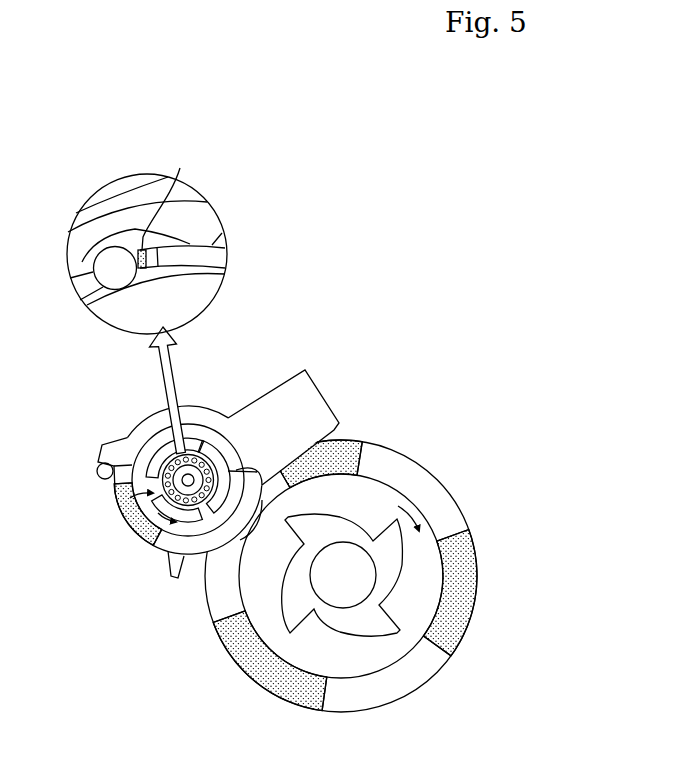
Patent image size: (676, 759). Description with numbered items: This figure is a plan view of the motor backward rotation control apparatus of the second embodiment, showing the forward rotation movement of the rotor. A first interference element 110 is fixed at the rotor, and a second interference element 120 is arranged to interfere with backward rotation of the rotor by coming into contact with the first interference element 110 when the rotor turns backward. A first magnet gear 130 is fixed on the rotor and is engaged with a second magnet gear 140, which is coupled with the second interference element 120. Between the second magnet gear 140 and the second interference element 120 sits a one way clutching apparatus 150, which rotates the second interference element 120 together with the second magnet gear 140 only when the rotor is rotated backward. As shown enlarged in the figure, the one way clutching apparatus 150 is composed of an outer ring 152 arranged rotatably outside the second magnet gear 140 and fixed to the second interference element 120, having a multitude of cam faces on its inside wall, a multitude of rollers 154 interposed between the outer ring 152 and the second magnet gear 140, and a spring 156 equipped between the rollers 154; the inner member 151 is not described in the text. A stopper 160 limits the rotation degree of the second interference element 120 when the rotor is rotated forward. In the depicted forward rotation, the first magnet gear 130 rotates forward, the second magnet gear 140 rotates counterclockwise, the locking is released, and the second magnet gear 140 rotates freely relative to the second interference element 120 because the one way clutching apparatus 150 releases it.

The first interference element 110 is at (387, 542).
The second interference element 120 is at (273, 418).
The first magnet gear 130 is at (440, 510).
The second magnet gear 140 is at (118, 307).
The one way clutching apparatus 150 is at (178, 115).
The shaft 151 is at (108, 262).
The outer ring 152 is at (135, 218).
The roller 154 is at (112, 260).
The spring 156 is at (180, 168).
The stopper 160 is at (97, 472).